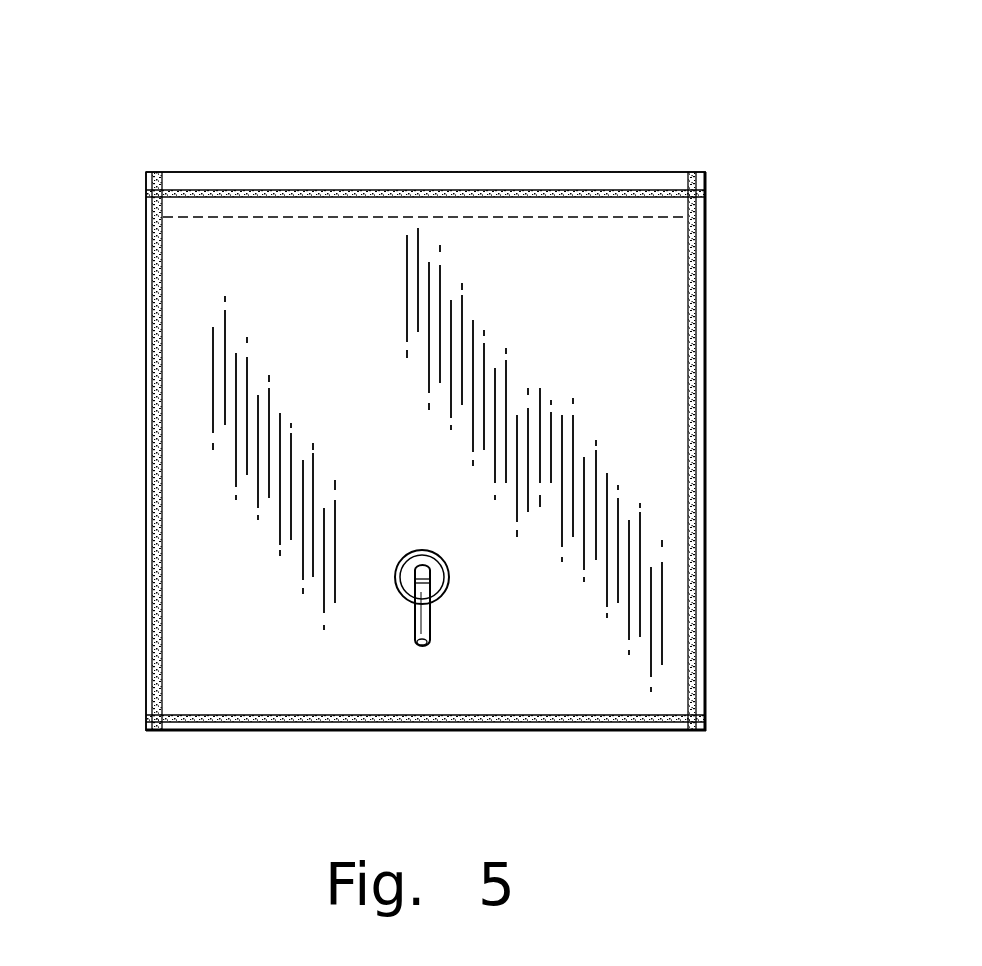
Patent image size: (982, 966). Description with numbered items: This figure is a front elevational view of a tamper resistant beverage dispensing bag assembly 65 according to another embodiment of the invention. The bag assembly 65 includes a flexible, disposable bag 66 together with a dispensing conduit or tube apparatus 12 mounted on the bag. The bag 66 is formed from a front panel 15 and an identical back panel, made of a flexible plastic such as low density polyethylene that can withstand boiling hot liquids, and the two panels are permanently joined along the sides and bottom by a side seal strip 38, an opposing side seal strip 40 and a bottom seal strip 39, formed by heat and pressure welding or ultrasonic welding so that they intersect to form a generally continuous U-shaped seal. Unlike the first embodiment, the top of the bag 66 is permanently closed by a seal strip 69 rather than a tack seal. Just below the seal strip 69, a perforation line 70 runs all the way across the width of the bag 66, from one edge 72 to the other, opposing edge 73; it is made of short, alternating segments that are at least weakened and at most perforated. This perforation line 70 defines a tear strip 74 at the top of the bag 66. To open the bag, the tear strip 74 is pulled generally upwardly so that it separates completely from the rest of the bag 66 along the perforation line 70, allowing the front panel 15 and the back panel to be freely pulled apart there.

The bag assembly 65 is at (757, 83).
The bag 66 is at (714, 263).
The seal strip 69 is at (185, 190).
The tear strip 74 is at (297, 205).
The edge 72 is at (146, 240).
The front panel 15 is at (178, 291).
The side seal strip 38 is at (150, 340).
The side seal strip 40 is at (706, 410).
The opposing edge 73 is at (706, 345).
The bottom seal strip 39 is at (290, 722).
The perforation line 70 is at (259, 217).
The dispensing conduit or tube apparatus 12 is at (442, 612).